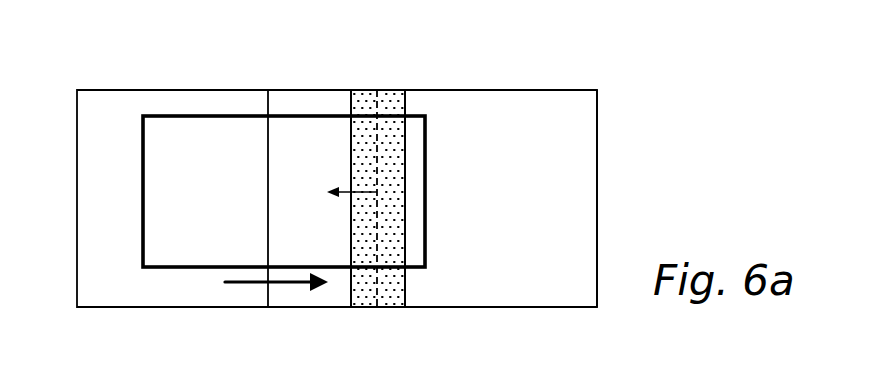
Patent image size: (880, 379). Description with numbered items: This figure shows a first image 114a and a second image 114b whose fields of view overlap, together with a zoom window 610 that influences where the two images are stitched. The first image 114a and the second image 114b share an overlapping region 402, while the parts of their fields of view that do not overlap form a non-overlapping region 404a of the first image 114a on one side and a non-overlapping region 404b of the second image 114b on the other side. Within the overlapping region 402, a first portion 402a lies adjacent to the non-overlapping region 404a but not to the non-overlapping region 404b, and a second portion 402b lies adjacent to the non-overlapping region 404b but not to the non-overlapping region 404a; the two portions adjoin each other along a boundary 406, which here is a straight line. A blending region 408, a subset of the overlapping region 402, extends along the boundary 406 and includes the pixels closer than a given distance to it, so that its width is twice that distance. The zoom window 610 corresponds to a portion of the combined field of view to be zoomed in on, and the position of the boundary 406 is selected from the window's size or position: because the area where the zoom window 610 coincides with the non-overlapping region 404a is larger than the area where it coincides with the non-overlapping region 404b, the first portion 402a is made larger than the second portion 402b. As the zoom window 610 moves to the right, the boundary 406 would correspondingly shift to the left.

The non-overlapping region of the first image 404a is at (124, 129).
The non-overlapping region of the second image 404b is at (572, 190).
The first image 114a is at (257, 89).
The second image 114b is at (530, 88).
The overlapping region 402 is at (308, 107).
The first portion of the overlapping region 402a is at (268, 307).
The second portion of the overlapping region 402b is at (377, 307).
The boundary 406 is at (378, 165).
The blending region 408 is at (388, 238).
The zoom window 610 is at (143, 227).